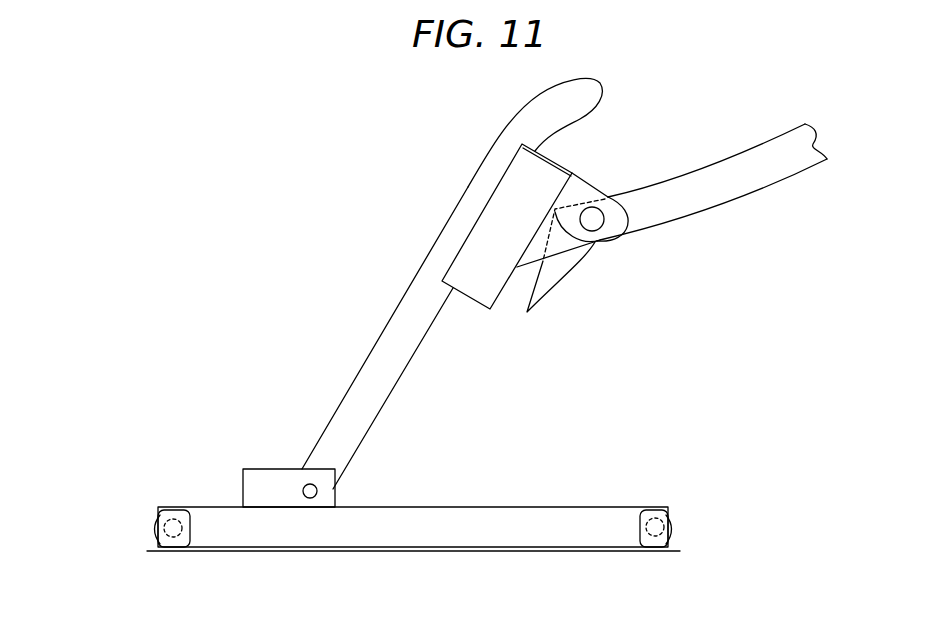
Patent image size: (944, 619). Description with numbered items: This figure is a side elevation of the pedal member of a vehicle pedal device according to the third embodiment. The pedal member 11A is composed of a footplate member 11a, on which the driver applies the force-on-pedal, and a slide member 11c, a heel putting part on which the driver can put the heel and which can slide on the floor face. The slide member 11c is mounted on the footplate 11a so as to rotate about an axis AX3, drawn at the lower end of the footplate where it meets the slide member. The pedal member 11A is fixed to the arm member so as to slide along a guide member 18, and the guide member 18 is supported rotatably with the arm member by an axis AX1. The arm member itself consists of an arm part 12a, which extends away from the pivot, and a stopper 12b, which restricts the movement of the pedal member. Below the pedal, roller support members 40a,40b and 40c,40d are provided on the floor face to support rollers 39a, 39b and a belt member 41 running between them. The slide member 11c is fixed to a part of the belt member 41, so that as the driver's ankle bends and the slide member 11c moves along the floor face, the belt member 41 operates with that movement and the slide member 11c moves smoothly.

The pedal member 11A is at (333, 383).
The footplate member 11a is at (422, 262).
The slide member 11c is at (243, 487).
The axis AX3 is at (308, 490).
The guide member 18 is at (473, 308).
The arm part 12a is at (733, 177).
The stopper 12b is at (555, 293).
The axis AX1 is at (592, 221).
The belt member 41 is at (428, 504).
The roller 39a is at (635, 528).
The roller 39b is at (190, 527).
The roller support members 40a,40b is at (680, 552).
The roller support members 40c,40d is at (147, 552).